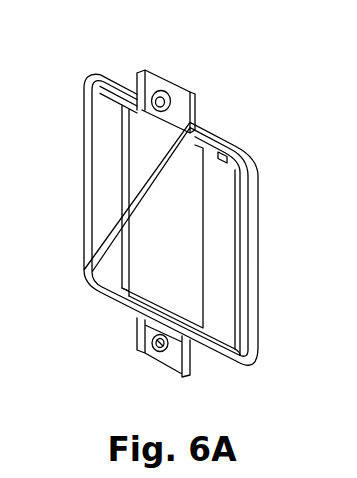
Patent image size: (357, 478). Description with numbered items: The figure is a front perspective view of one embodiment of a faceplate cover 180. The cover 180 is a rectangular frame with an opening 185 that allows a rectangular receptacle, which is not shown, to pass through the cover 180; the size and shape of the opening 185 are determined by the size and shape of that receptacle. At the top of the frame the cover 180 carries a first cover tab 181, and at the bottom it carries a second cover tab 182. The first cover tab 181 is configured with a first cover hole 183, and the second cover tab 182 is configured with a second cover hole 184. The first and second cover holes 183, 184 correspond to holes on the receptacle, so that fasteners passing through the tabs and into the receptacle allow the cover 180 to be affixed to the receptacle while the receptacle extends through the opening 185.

The cover 180 is at (256, 275).
The first cover tab 181 is at (149, 88).
The second cover tab 182 is at (170, 360).
The first cover hole 183 is at (163, 98).
The second cover hole 184 is at (153, 349).
The opening 185 is at (127, 218).